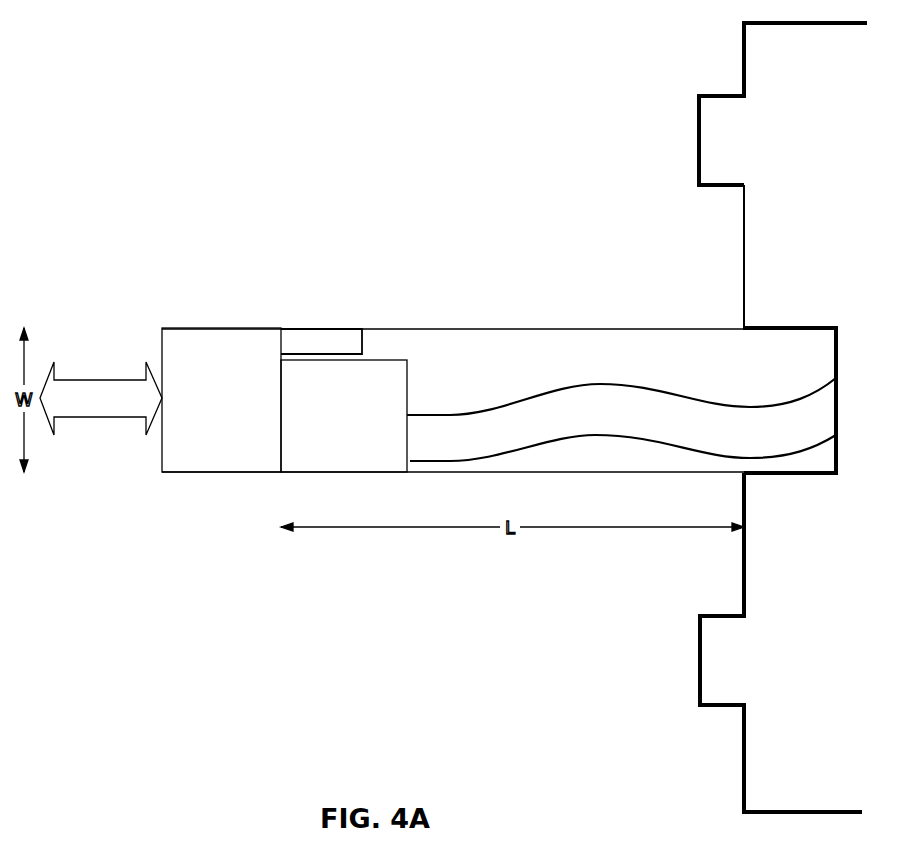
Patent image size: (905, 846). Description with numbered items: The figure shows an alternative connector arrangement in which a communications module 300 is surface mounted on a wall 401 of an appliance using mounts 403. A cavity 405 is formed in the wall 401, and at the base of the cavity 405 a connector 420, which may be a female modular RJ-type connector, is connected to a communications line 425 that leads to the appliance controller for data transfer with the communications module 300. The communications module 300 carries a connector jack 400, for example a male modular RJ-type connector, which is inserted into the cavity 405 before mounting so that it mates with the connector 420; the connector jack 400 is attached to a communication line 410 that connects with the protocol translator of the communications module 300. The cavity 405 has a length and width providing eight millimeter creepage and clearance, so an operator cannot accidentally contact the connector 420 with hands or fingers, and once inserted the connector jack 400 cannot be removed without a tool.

The communications module 300 is at (793, 279).
The wall 401 is at (743, 260).
The mounts 403 is at (698, 150).
The cavity 405 is at (672, 329).
The connector jack 400 is at (325, 426).
The communication line 410 is at (548, 419).
The connector 420 is at (205, 409).
The communications line 425 is at (83, 409).